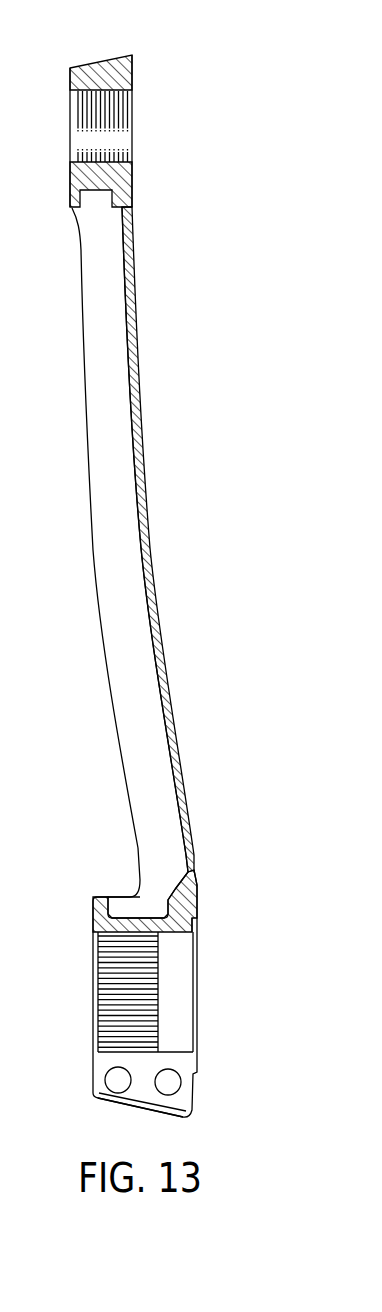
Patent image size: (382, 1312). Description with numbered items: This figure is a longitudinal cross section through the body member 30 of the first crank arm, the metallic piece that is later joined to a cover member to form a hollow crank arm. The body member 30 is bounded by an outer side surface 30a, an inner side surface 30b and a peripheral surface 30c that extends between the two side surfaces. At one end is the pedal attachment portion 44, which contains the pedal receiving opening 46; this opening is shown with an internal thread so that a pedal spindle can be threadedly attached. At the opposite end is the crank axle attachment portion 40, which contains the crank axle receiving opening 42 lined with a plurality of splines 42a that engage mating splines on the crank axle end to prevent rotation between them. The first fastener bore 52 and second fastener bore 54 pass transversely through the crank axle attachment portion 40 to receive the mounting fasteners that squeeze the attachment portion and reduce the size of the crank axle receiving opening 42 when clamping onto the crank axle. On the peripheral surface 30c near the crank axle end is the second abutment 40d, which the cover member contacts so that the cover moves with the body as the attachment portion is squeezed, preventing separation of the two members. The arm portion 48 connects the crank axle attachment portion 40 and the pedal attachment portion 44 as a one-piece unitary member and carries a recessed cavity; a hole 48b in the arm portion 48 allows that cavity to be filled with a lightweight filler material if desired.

The body member 30 is at (173, 175).
The outer side surface 30a is at (69, 83).
The inner side surface 30b is at (134, 76).
The peripheral surface 30c is at (88, 67).
The crank axle attachment portion 40 is at (93, 912).
The second abutment 40d is at (125, 1106).
The crank axle receiving opening 42 is at (102, 1000).
The splines 42a is at (150, 980).
The pedal attachment portion 44 is at (70, 182).
The pedal receiving opening 46 is at (80, 118).
The arm portion 48 is at (141, 545).
The hole 48b is at (181, 768).
The first fastener bore 52 is at (175, 1082).
The second fastener bore 54 is at (111, 1076).